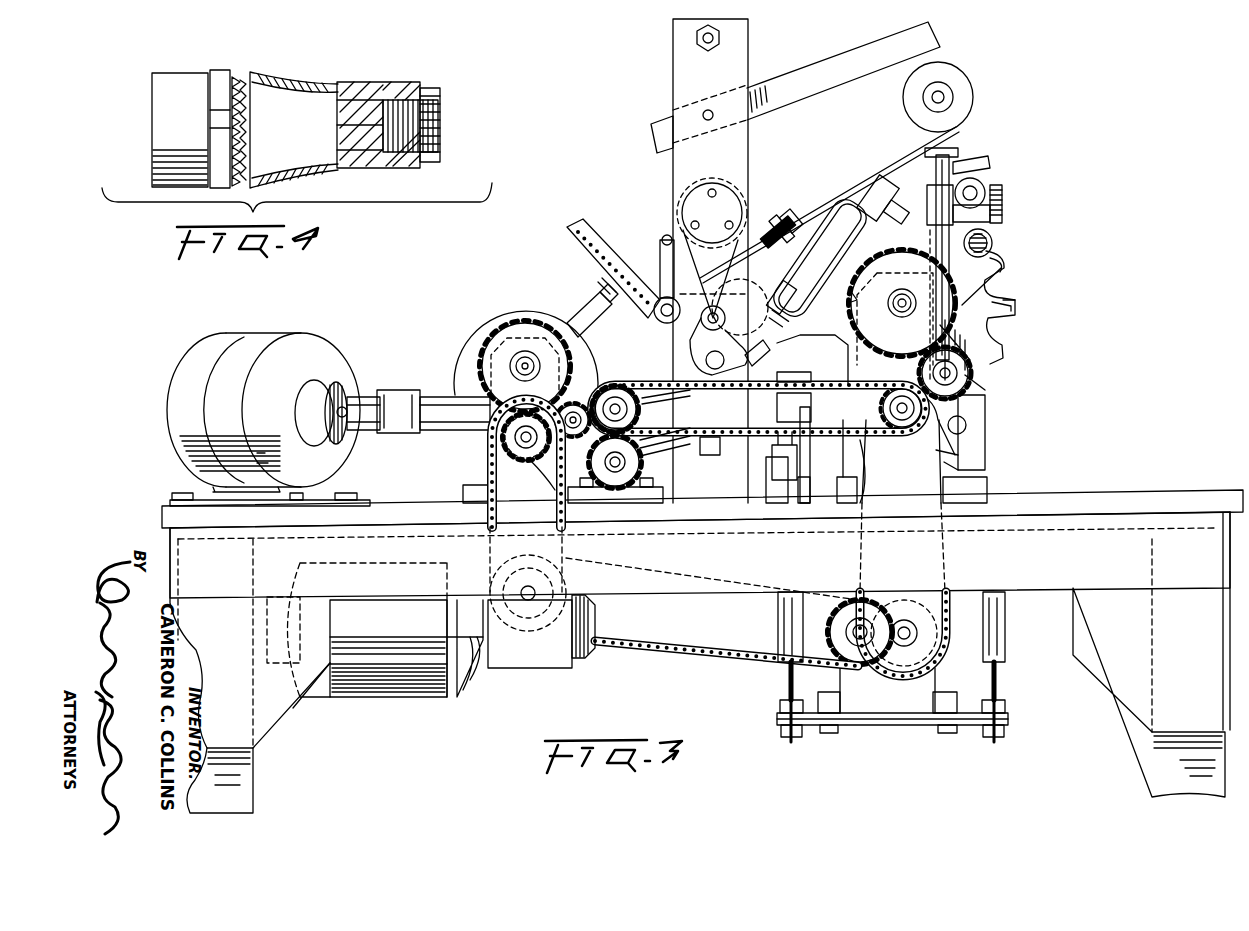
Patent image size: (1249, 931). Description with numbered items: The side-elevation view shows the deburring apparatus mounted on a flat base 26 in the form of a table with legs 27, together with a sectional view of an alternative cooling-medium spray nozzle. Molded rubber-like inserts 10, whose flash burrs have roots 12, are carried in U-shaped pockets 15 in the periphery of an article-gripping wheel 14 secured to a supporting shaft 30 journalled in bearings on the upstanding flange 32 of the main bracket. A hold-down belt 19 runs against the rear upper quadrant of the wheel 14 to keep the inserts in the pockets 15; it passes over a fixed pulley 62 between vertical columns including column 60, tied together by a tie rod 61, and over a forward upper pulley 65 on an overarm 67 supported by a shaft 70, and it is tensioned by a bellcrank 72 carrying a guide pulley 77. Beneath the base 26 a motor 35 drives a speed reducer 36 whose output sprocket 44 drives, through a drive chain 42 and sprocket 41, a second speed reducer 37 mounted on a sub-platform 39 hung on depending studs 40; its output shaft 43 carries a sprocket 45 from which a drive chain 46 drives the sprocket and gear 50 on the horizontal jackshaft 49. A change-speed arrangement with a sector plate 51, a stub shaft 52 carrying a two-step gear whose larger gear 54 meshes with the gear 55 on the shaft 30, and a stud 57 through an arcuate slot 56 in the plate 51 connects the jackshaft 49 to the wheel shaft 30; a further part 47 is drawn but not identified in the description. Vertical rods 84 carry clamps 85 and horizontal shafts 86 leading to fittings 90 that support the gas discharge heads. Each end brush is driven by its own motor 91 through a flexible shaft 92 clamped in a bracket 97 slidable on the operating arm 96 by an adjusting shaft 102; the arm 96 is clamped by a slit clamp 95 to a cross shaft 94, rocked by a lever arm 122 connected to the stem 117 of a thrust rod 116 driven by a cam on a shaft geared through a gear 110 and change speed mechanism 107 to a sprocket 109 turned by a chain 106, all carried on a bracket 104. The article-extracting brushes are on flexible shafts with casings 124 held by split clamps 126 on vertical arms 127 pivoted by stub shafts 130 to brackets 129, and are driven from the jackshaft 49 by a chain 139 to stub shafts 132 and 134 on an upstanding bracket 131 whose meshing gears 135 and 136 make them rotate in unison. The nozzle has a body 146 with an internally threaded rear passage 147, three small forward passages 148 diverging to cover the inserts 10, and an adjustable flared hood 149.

In FIG. 9, the insert 10 is at (157, 97).
In FIG. 3, the insert 10 is at (993, 241).
In FIG. 9, the burr roots 12 is at (236, 82).
In FIG. 3, the wheel 14 is at (1033, 310).
In FIG. 3, the pockets 15 is at (1013, 294).
In FIG. 3, the hold-down belt 19 is at (905, 160).
In FIG. 3, the flat base 26 is at (1072, 500).
In FIG. 3, the legs 27 is at (260, 752).
In FIG. 3, the supporting shaft 30 is at (1001, 275).
In FIG. 3, the upstanding flange 32 is at (990, 345).
In FIG. 3, the motor 35 is at (400, 697).
In FIG. 3, the speed reducer 36 is at (520, 668).
In FIG. 3, the speed reducer 37 is at (868, 705).
In FIG. 3, the sub-platform 39 is at (910, 720).
In FIG. 3, the depending studs 40 is at (778, 670).
In FIG. 3, the sprocket 41 is at (826, 630).
In FIG. 3, the drive chain 42 is at (700, 652).
In FIG. 3, the output shaft 43 is at (905, 620).
In FIG. 3, the sprocket 44 is at (500, 578).
In FIG. 3, the sprocket 45 is at (940, 655).
In FIG. 3, the drive chain 46 is at (975, 488).
In FIG. 3, the bearing bracket 47 is at (950, 416).
In FIG. 3, the jackshaft 49 is at (900, 425).
In FIG. 3, the gear 50 is at (870, 440).
In FIG. 3, the sector plate 51 is at (975, 398).
In FIG. 3, the stub shaft 52 is at (958, 365).
In FIG. 3, the larger gear 54 is at (968, 380).
In FIG. 3, the gear 55 is at (880, 330).
In FIG. 3, the arcuate slot 56 is at (960, 452).
In FIG. 3, the stud 57 is at (968, 428).
In FIG. 3, the vertical column 60 is at (680, 85).
In FIG. 3, the tie rod 61 is at (698, 40).
In FIG. 3, the fixed pulley 62 is at (690, 187).
In FIG. 3, the forward upper hold-down belt pulley 65 is at (972, 80).
In FIG. 3, the overarm 67 is at (820, 70).
In FIG. 3, the shaft 70 is at (702, 116).
In FIG. 3, the bellcrank 72 is at (653, 338).
In FIG. 3, the guide pulley 77 is at (755, 292).
In FIG. 3, the rods 84 is at (1002, 215).
In FIG. 3, the clamp 85 is at (952, 160).
In FIG. 3, the horizontal shaft 86 is at (990, 157).
In FIG. 3, the fittings 90 is at (880, 182).
In FIG. 3, the motor 91 is at (250, 335).
In FIG. 3, the flexible shaft 92 is at (440, 400).
In FIG. 3, the cross shaft 94 is at (760, 340).
In FIG. 3, the slit clamp means 95 is at (700, 345).
In FIG. 3, the operating and supporting arm 96 is at (786, 282).
In FIG. 3, the clamping bracket 97 is at (838, 215).
In FIG. 3, the adjusting shaft 102 is at (768, 222).
In FIG. 3, the bracket 104 is at (520, 335).
In FIG. 3, the chain 106 is at (495, 455).
In FIG. 3, the change speed mechanism 107 is at (511, 484).
In FIG. 3, the sprocket 109 is at (490, 442).
In FIG. 3, the gear 110 is at (538, 318).
In FIG. 3, the thrust rod 116 is at (584, 318).
In FIG. 3, the stem 117 is at (610, 290).
In FIG. 3, the lever arm 122 is at (615, 258).
In FIG. 3, the flexible casings 124 is at (828, 411).
In FIG. 3, the split clamp 126 is at (810, 366).
In FIG. 3, the vertical arm 127 is at (830, 482).
In FIG. 3, the supporting brackets 129 is at (774, 482).
In FIG. 3, the stub shafts 130 is at (772, 450).
In FIG. 3, the upstanding bracket 131 is at (598, 495).
In FIG. 3, the stub shaft 132 is at (620, 400).
In FIG. 3, the stub shaft 134 is at (620, 470).
In FIG. 3, the gear 135 is at (650, 405).
In FIG. 3, the gear 136 is at (645, 462).
In FIG. 3, the chain 139 is at (708, 448).
In FIG. 9, the nozzle body 146 is at (432, 96).
In FIG. 9, the internally threaded passage 147 is at (436, 152).
In FIG. 9, the small passages 148 is at (370, 100).
In FIG. 9, the flared hood 149 is at (292, 78).